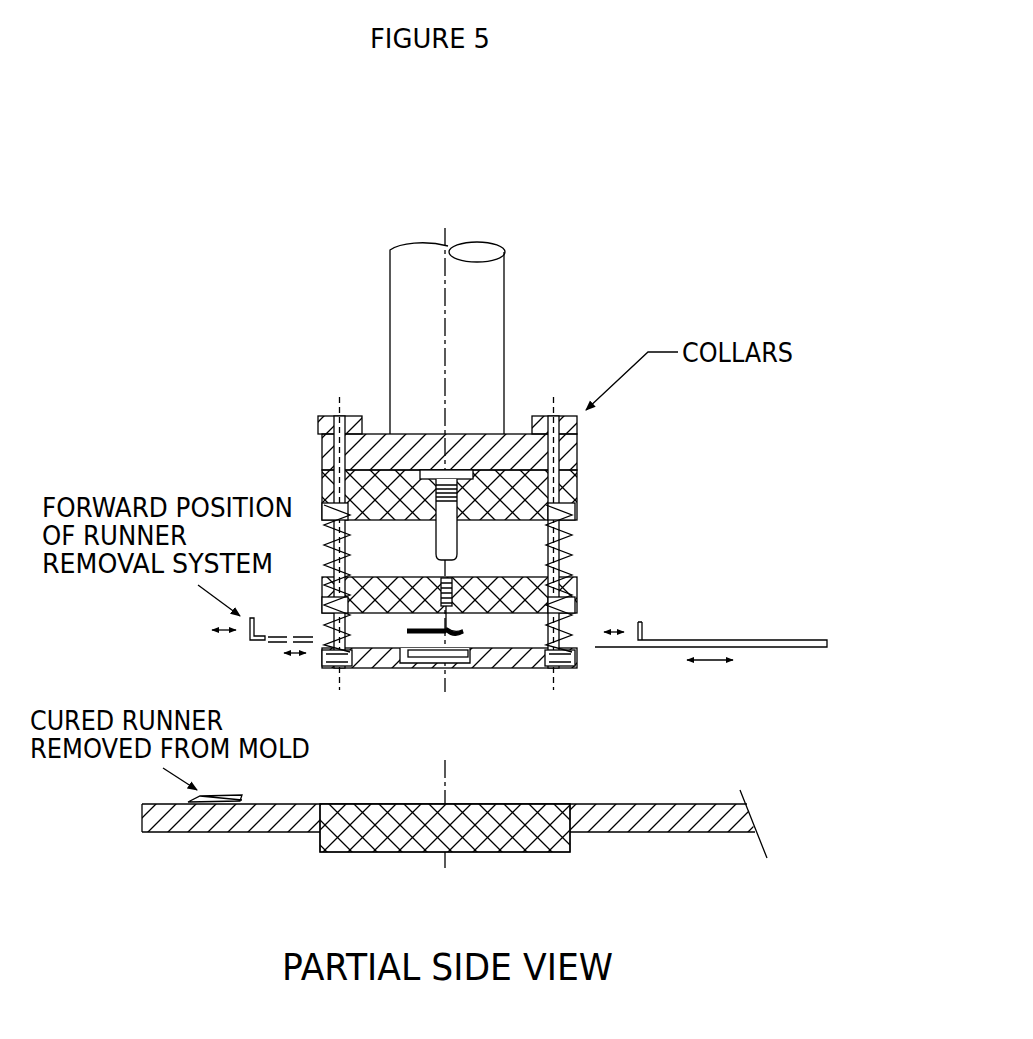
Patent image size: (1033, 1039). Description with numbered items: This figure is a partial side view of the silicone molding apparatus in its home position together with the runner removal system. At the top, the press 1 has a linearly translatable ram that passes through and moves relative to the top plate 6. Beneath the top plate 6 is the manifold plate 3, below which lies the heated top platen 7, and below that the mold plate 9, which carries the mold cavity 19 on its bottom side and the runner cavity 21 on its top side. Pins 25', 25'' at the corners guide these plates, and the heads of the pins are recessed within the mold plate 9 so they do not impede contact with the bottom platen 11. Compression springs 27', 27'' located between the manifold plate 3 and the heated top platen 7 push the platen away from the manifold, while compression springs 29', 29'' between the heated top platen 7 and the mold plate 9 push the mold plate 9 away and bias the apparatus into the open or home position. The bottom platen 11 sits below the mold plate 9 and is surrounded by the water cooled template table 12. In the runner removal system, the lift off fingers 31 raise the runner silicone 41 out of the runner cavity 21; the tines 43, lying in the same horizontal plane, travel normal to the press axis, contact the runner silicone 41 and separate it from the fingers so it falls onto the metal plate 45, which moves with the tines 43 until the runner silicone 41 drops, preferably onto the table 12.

The press 1 is at (488, 287).
The manifold 3 is at (573, 493).
The top plate 6 is at (573, 457).
The top platen 7 is at (573, 578).
The mold plate 9 is at (574, 657).
The bottom platen 11 is at (527, 852).
The template table 12 is at (673, 827).
The mold cavity 19 is at (427, 668).
The runner cavity 21 is at (403, 651).
The pin 25' is at (348, 517).
The pin 25'' is at (564, 517).
The compression spring 27' is at (372, 578).
The compression spring 27'' is at (602, 578).
The compression spring 29' is at (308, 584).
The compression spring 29'' is at (592, 584).
The lift off finger 31 is at (441, 629).
The runner silicone 41 is at (458, 634).
The tines 43 is at (641, 630).
The metal plate 45 is at (800, 653).